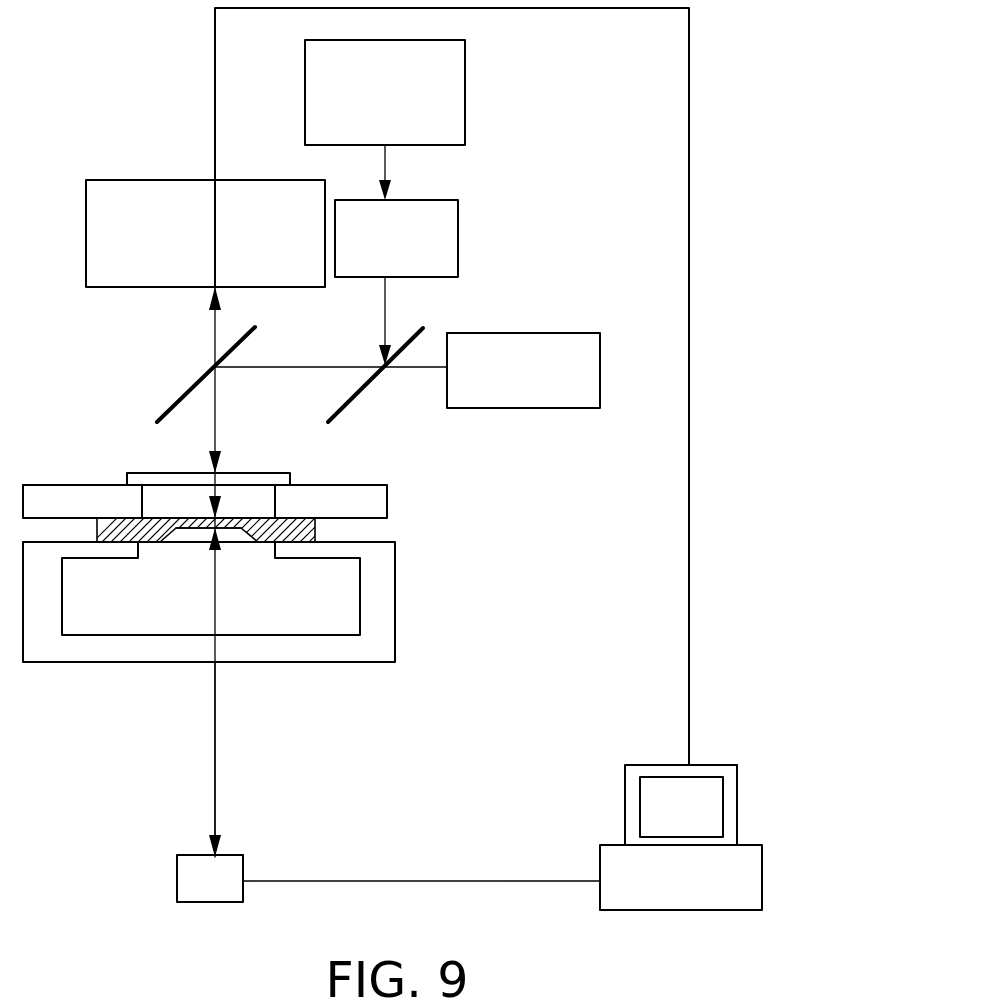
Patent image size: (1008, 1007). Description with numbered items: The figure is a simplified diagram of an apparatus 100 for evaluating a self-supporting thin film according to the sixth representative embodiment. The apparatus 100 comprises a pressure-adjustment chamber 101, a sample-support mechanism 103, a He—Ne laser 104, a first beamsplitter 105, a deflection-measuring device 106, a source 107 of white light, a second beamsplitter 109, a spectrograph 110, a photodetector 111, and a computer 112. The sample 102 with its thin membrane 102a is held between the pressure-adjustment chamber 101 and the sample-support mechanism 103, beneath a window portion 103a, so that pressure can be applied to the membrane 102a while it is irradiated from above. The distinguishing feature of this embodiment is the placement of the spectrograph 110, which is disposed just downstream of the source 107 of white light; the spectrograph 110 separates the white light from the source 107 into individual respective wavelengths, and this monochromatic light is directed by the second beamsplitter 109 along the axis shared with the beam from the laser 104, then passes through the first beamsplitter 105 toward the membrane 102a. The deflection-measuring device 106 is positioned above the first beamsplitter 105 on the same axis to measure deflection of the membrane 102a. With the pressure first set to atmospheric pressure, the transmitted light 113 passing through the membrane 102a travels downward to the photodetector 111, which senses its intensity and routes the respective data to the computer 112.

The apparatus 100 is at (752, 178).
The pressure-adjustment chamber 101 is at (395, 613).
The sample 102 is at (268, 542).
The membrane 102a is at (197, 530).
The sample-support mechanism 103 is at (388, 508).
The sample-support mechanism component 103a is at (277, 472).
The He—Ne laser 104 is at (540, 398).
The first beamsplitter 105 is at (188, 388).
The deflection-measuring device 106 is at (88, 242).
The source of white light 107 is at (453, 82).
The second beamsplitter 109 is at (362, 387).
The spectrograph 110 is at (458, 228).
The photodetector 111 is at (177, 883).
The computer 112 is at (665, 895).
The transmitted light 113 is at (215, 705).